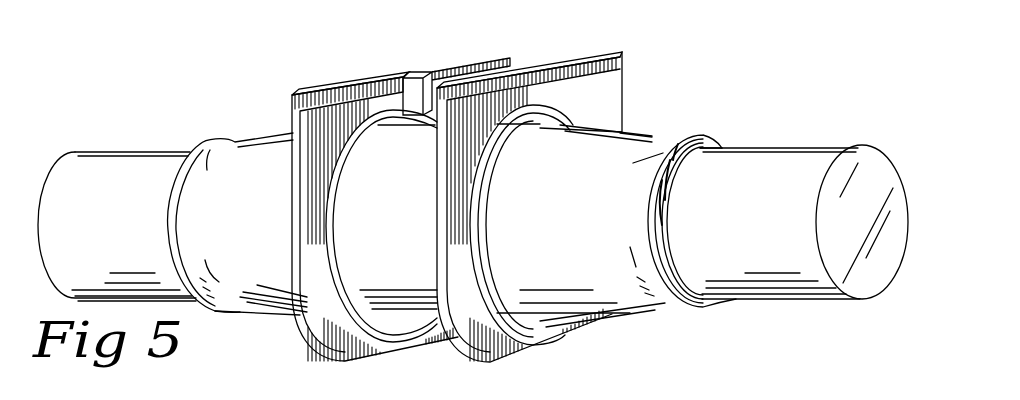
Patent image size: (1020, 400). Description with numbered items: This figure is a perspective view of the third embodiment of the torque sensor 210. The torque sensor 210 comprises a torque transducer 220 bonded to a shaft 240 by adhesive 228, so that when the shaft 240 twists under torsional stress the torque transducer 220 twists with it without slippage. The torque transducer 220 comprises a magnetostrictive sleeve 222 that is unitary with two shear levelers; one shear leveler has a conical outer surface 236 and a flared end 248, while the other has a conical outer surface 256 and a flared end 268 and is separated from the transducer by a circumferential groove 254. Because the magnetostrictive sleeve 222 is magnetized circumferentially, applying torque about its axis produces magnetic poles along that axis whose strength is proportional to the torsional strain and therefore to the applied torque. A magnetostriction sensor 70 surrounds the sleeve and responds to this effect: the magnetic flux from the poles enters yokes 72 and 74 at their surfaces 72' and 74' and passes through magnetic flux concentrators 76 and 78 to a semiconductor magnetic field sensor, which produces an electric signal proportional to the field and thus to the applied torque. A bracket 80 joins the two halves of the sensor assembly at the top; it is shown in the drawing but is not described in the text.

The magnetostriction sensor 70 is at (663, 68).
The yoke 72 is at (386, 349).
The surface 72' is at (404, 149).
The yoke 74 is at (581, 92).
The surface 74' is at (567, 348).
The magnetic flux concentrator 76 is at (340, 87).
The magnetic flux concentrator 78 is at (540, 70).
The bracket 80 is at (443, 68).
The torque sensor 210 is at (222, 31).
The torque transducer 220 is at (642, 353).
The magnetostrictive sleeve 222 is at (414, 229).
The adhesive 228 is at (700, 143).
The conical outer surface 236 is at (282, 227).
The shaft 240 is at (146, 227).
The flared end 248 is at (227, 310).
The circumferential groove 254 is at (498, 150).
The conical outer surface 256 is at (574, 229).
The flared end 268 is at (673, 137).